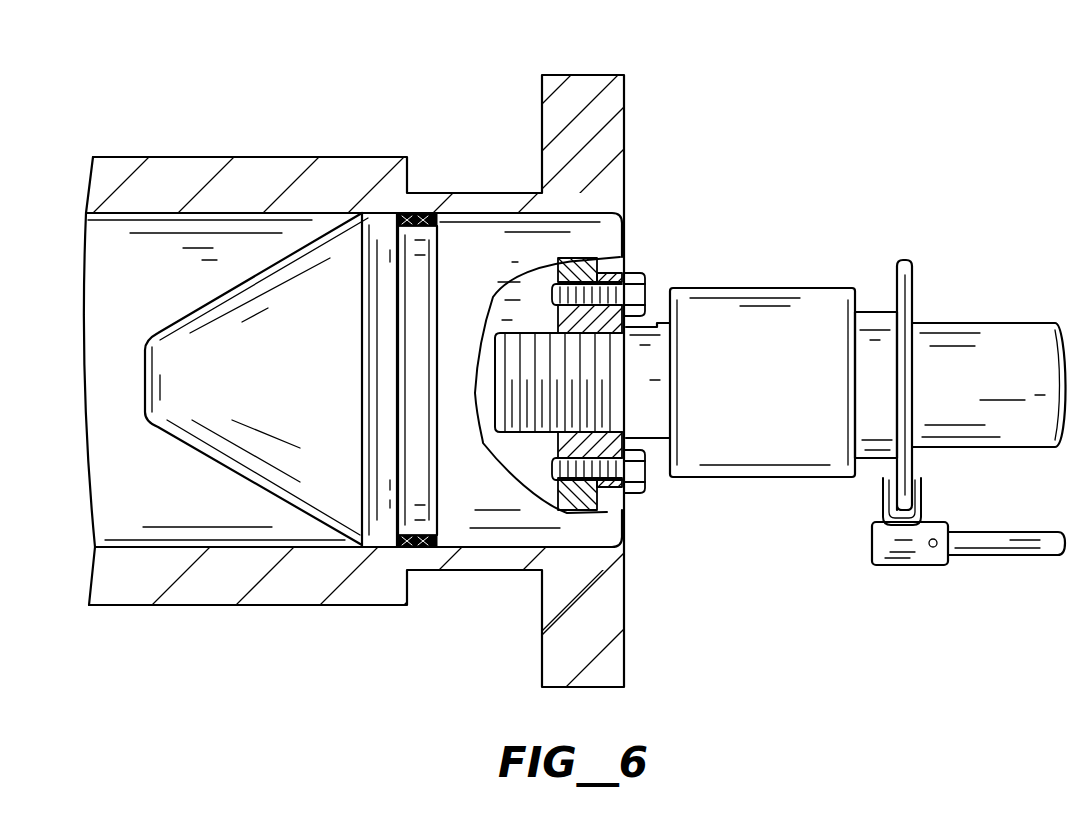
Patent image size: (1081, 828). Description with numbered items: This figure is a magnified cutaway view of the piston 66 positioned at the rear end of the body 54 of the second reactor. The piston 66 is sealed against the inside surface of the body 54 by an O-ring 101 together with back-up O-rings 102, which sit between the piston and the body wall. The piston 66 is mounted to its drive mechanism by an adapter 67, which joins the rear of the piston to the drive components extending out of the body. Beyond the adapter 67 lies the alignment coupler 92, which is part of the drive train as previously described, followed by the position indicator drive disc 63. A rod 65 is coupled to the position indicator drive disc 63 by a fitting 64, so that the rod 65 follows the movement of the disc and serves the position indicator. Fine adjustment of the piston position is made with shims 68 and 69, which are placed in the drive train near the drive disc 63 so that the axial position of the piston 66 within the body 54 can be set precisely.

The body 54 is at (187, 192).
The O-ring 101 is at (417, 215).
The back-up O-rings 102 is at (428, 212).
The piston 66 is at (253, 445).
The adapter 67 is at (553, 440).
The alignment coupler 92 is at (760, 335).
The position indicator drive disc 63 is at (908, 260).
The shim 69 is at (920, 370).
The fitting 64 is at (872, 535).
The shim 68 is at (917, 423).
The rod 65 is at (997, 543).